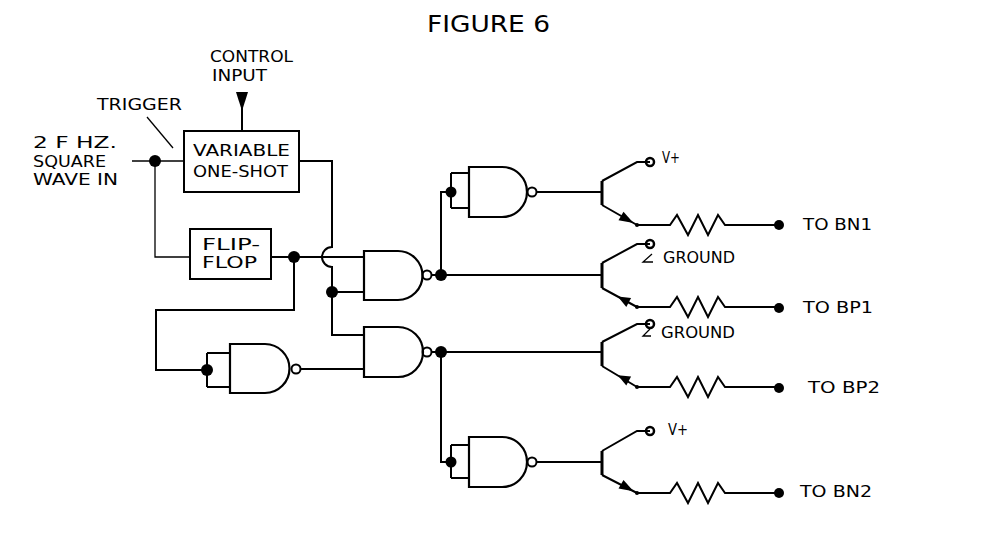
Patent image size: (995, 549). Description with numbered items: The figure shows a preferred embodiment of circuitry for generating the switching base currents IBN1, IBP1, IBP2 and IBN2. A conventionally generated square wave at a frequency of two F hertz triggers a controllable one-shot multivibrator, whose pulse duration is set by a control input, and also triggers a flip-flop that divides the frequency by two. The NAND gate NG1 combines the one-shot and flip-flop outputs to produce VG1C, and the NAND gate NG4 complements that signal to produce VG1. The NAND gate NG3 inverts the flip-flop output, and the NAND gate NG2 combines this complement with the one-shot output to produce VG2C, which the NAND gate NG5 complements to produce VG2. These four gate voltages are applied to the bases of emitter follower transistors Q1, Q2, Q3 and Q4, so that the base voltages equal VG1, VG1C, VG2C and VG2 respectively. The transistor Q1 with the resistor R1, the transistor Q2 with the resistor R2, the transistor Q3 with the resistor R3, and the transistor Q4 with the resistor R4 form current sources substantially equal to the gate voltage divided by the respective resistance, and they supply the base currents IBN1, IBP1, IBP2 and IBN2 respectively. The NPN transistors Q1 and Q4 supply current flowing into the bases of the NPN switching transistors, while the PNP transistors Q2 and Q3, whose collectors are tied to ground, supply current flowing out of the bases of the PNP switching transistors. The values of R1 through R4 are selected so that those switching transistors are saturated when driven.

The NAND gate NG1 is at (398, 275).
The NAND gate NG2 is at (398, 352).
The NAND gate NG3 is at (265, 368).
The NAND gate NG4 is at (503, 192).
The NAND gate NG5 is at (503, 462).
The emitter follower transistor Q1 is at (623, 190).
The emitter follower transistor Q2 is at (625, 271).
The emitter follower transistor Q3 is at (625, 353).
The emitter follower transistor Q4 is at (625, 459).
The resistor R1 is at (727, 232).
The resistor R2 is at (726, 315).
The resistor R3 is at (722, 395).
The resistor R4 is at (726, 505).
The base current IBN1 is at (716, 205).
The base current IBP1 is at (737, 290).
The base current IBP2 is at (727, 365).
The base current IBN2 is at (716, 475).